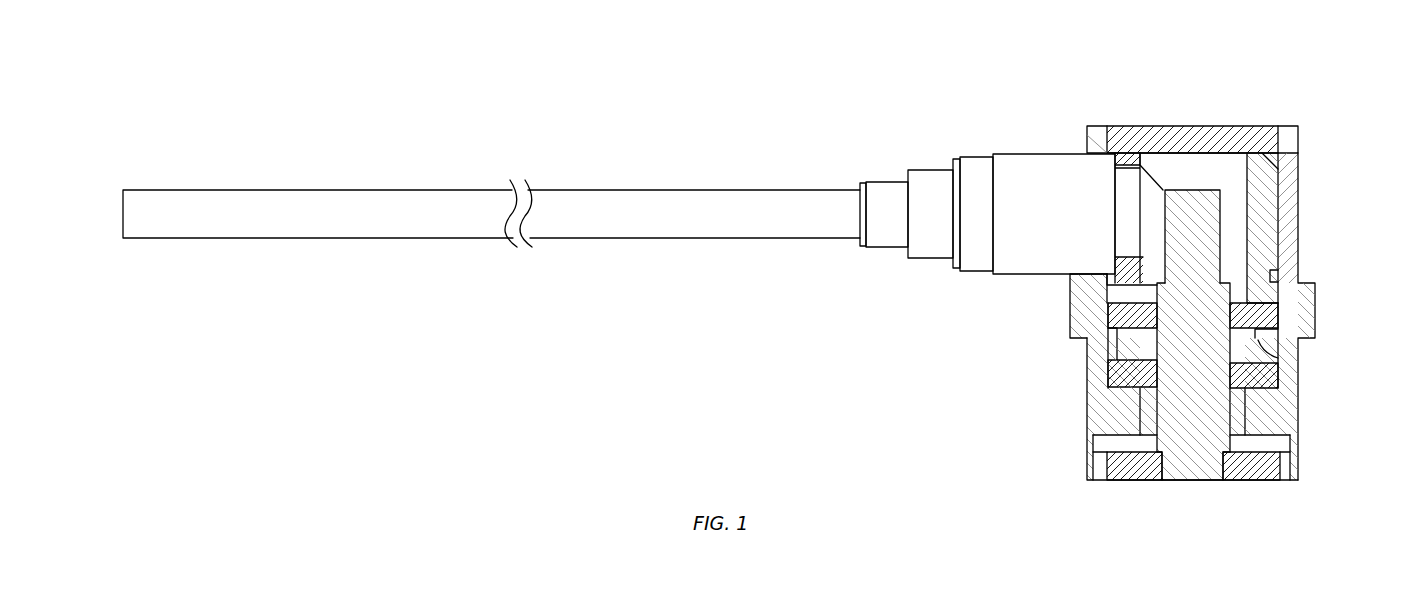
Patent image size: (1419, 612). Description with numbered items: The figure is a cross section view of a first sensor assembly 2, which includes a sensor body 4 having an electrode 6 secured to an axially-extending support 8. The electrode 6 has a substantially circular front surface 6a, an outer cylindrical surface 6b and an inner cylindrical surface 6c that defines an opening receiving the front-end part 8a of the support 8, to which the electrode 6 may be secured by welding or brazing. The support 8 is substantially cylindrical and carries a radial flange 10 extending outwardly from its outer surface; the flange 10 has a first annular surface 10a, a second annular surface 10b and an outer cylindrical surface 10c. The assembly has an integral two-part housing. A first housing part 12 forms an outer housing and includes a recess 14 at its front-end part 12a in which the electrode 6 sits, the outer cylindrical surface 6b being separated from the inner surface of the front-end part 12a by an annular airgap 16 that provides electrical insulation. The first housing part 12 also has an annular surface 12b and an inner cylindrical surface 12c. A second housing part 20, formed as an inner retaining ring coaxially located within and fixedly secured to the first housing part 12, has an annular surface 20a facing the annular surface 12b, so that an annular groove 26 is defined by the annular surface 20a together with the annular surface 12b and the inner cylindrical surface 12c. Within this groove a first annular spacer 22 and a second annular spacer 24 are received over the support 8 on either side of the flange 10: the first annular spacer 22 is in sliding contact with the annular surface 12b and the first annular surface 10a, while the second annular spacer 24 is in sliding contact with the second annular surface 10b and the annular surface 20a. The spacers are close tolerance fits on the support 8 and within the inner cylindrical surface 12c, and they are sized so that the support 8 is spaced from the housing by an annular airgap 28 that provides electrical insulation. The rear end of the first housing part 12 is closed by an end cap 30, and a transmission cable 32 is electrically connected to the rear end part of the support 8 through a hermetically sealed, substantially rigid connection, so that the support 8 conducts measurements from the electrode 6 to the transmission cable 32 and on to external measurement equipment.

The first sensor assembly 2 is at (944, 79).
The sensor body 4 is at (1210, 235).
The electrode 6 is at (1270, 481).
The front surface 6a is at (1137, 481).
The outer cylindrical surface 6b is at (1283, 468).
The inner cylindrical surface 6c is at (1228, 481).
The support 8 is at (1175, 413).
The front-end part 8a is at (1190, 481).
The radial flange 10 is at (1270, 356).
The first annular surface 10a is at (1268, 368).
The second annular surface 10b is at (1270, 333).
The outer cylindrical surface 10c is at (1272, 345).
The first housing part 12 is at (1273, 410).
The front-end part 12a is at (1093, 470).
The annular surface 12b is at (1113, 398).
The inner cylindrical surface 12c is at (1112, 345).
The recess 14 is at (1112, 442).
The airgap 16 is at (1102, 481).
The second housing part 20 is at (1272, 177).
The annular surface 20a is at (1100, 317).
The first annular spacer 22 is at (1235, 377).
The second annular spacer 24 is at (1312, 300).
The annular groove 26 is at (1105, 330).
The airgap 28 is at (1237, 206).
The end cap 30 is at (1193, 135).
The transmission cable 32 is at (793, 270).